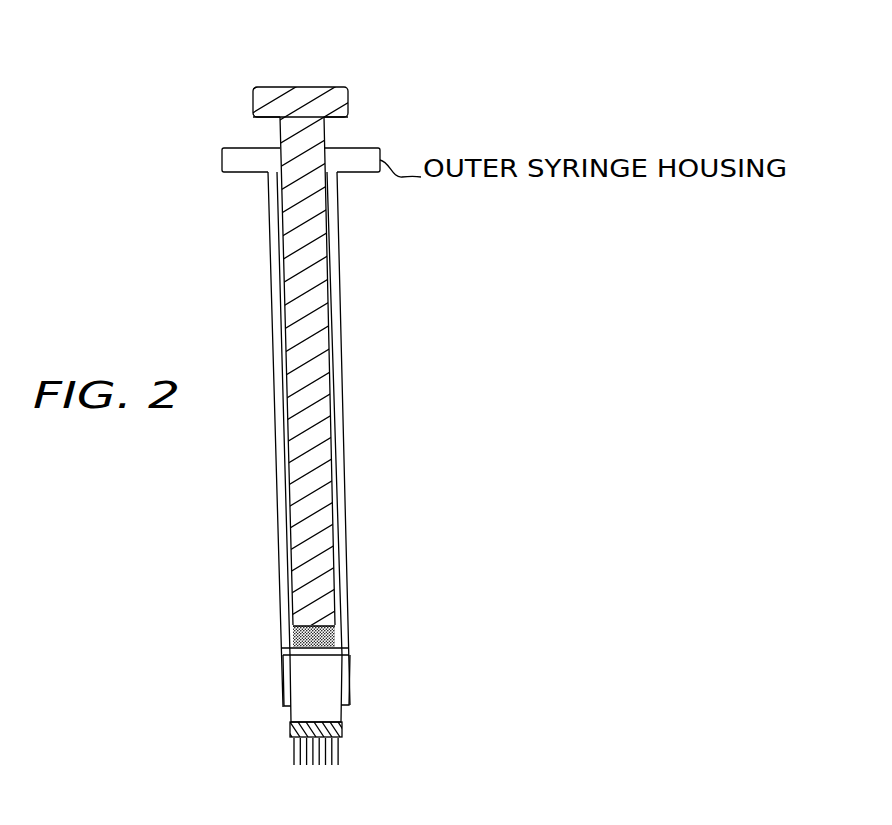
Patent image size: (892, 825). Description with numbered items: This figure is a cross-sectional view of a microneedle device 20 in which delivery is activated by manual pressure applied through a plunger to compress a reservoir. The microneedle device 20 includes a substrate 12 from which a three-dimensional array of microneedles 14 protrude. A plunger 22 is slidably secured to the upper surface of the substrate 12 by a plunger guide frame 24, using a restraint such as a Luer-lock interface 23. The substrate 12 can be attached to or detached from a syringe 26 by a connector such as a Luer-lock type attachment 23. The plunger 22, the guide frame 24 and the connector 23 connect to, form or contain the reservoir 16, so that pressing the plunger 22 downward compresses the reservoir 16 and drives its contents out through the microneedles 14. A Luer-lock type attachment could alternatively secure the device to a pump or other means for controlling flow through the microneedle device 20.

The plunger 22 is at (349, 94).
The plunger guide frame 24 is at (344, 470).
The syringe 26 is at (548, 468).
The Luer-lock type attachment 23 is at (350, 688).
The reservoir 16 is at (312, 711).
The substrate 12 is at (343, 727).
The microneedles 14 is at (345, 748).
The microneedle device 20 is at (248, 740).